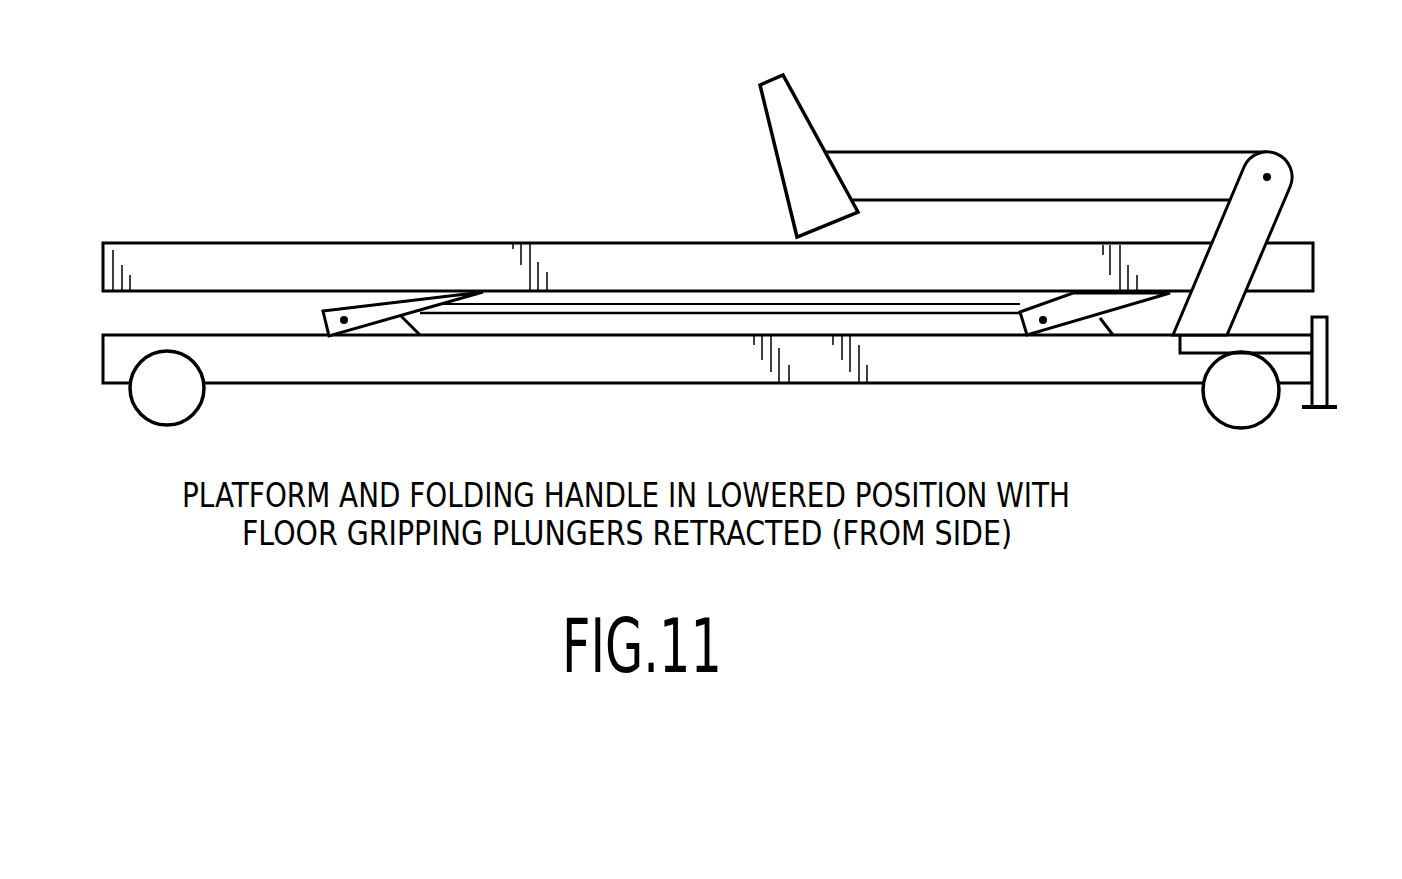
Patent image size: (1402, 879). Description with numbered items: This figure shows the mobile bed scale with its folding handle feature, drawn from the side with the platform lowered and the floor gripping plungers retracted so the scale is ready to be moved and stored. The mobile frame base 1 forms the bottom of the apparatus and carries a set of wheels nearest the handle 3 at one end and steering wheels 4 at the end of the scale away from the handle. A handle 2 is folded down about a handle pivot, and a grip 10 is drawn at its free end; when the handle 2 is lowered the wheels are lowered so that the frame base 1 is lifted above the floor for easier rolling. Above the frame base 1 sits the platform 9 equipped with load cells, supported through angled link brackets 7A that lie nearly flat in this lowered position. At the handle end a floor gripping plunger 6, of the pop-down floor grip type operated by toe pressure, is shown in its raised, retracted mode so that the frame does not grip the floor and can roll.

The mobile frame base 1 is at (718, 390).
The handle 2 is at (1113, 148).
The wheels nearest the handle 3 is at (1200, 417).
The steering wheels 4 is at (141, 432).
The floor gripping plungers 6 is at (1328, 372).
The link bracket 7A is at (315, 321).
The platform 9 is at (206, 238).
The handle grip 10 is at (762, 163).